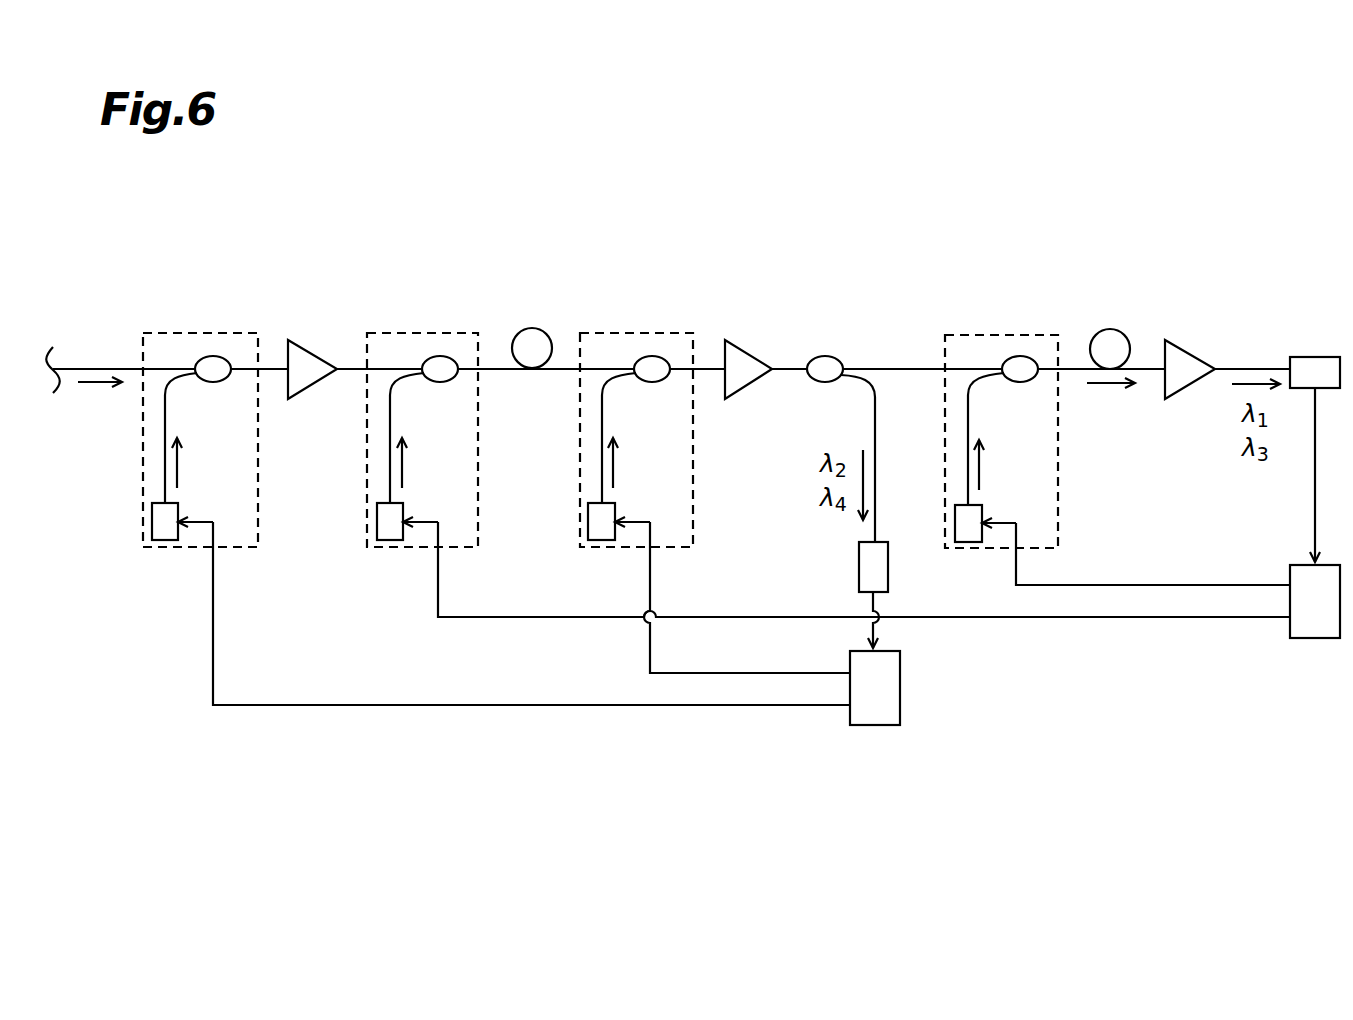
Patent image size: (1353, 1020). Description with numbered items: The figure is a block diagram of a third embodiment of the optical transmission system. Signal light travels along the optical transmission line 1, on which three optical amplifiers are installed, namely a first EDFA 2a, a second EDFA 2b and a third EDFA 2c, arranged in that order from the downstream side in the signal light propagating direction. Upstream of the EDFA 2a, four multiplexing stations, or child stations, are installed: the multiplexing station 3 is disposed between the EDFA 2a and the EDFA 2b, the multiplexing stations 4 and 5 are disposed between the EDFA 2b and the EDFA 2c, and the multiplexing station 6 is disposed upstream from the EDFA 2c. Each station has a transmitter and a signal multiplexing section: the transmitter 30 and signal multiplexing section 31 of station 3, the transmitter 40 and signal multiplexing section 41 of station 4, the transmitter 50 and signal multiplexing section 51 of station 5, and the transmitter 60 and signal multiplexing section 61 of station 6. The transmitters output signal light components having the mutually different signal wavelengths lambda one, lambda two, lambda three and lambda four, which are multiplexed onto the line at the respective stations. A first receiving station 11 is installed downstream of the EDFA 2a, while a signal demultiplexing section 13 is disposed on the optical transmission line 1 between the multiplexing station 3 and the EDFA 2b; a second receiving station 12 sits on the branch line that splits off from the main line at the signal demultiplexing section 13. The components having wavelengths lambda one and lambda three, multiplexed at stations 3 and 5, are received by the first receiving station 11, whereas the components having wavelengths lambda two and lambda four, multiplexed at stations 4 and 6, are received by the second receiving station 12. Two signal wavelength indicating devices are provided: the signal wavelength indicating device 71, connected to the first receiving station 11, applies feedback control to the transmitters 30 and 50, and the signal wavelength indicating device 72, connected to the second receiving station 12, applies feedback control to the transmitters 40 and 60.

The optical transmission line 1 is at (517, 322).
The first EDFA 2a is at (1202, 360).
The second EDFA 2b is at (760, 358).
The third EDFA 2c is at (327, 359).
The multiplexing station 3 is at (1025, 335).
The multiplexing station 4 is at (655, 332).
The multiplexing station 5 is at (447, 332).
The multiplexing station 6 is at (220, 332).
The first receiving station 11 is at (1312, 357).
The second receiving station 12 is at (859, 565).
The signal demultiplexing section 13 is at (823, 358).
The transmitter 30 is at (955, 517).
The signal multiplexing section 31 is at (1027, 380).
The transmitter 40 is at (588, 517).
The signal multiplexing section 41 is at (659, 380).
The transmitter 50 is at (377, 517).
The signal multiplexing section 51 is at (447, 380).
The transmitter 60 is at (152, 517).
The signal multiplexing section 61 is at (220, 380).
The signal wavelength indicating device 71 is at (1312, 642).
The signal wavelength indicating device 72 is at (870, 727).